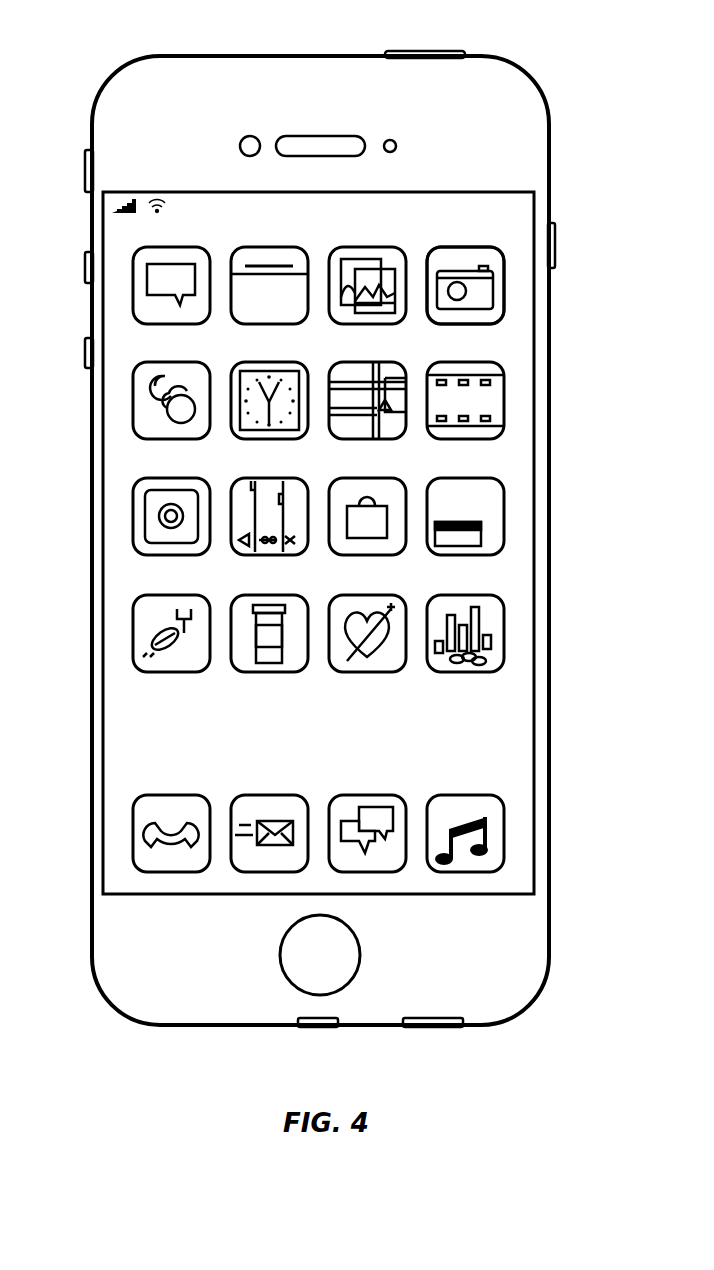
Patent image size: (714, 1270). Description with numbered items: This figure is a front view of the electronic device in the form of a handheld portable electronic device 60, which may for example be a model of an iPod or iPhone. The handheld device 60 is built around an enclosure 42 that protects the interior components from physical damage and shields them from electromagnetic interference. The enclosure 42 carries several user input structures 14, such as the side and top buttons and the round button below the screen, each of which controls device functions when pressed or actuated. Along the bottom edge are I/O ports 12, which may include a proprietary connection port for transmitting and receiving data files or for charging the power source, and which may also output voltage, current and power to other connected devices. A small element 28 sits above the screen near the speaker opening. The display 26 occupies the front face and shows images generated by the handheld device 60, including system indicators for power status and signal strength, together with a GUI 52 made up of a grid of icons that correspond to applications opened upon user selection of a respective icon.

The handheld portable electronic device 60 is at (96, 56).
The enclosure 42 is at (552, 468).
The user input structures 14 is at (424, 50).
The I/O ports 12 is at (319, 1030).
The camera 28 is at (251, 136).
The display 26 is at (520, 746).
The GUI 52 is at (512, 320).